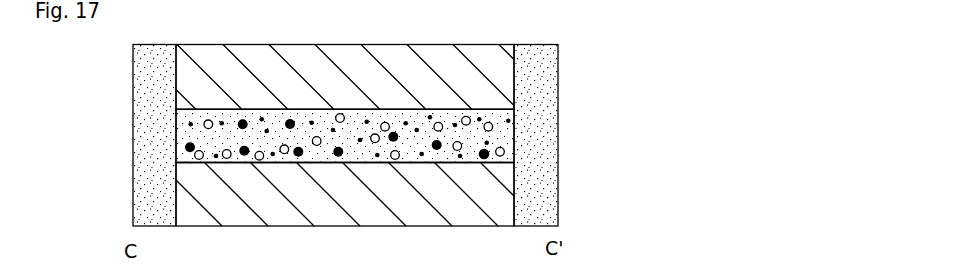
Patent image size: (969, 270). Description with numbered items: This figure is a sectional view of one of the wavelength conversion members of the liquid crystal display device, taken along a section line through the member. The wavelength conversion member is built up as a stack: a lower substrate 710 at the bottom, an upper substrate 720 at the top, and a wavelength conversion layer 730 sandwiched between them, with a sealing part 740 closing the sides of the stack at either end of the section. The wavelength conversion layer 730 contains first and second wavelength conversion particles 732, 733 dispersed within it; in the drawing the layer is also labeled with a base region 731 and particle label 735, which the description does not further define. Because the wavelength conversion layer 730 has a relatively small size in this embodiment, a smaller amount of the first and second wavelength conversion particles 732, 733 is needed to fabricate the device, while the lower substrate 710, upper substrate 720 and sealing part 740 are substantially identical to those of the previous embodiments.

The lower substrate 710 is at (503, 208).
The upper substrate 720 is at (503, 77).
The wavelength conversion layer 730 is at (429, 144).
The adhesive base material 731 is at (516, 130).
The first wavelength conversion particles 732 is at (515, 112).
The second wavelength conversion particles 733 is at (487, 163).
The particles 735 is at (504, 152).
The sealing part 740 is at (143, 125).